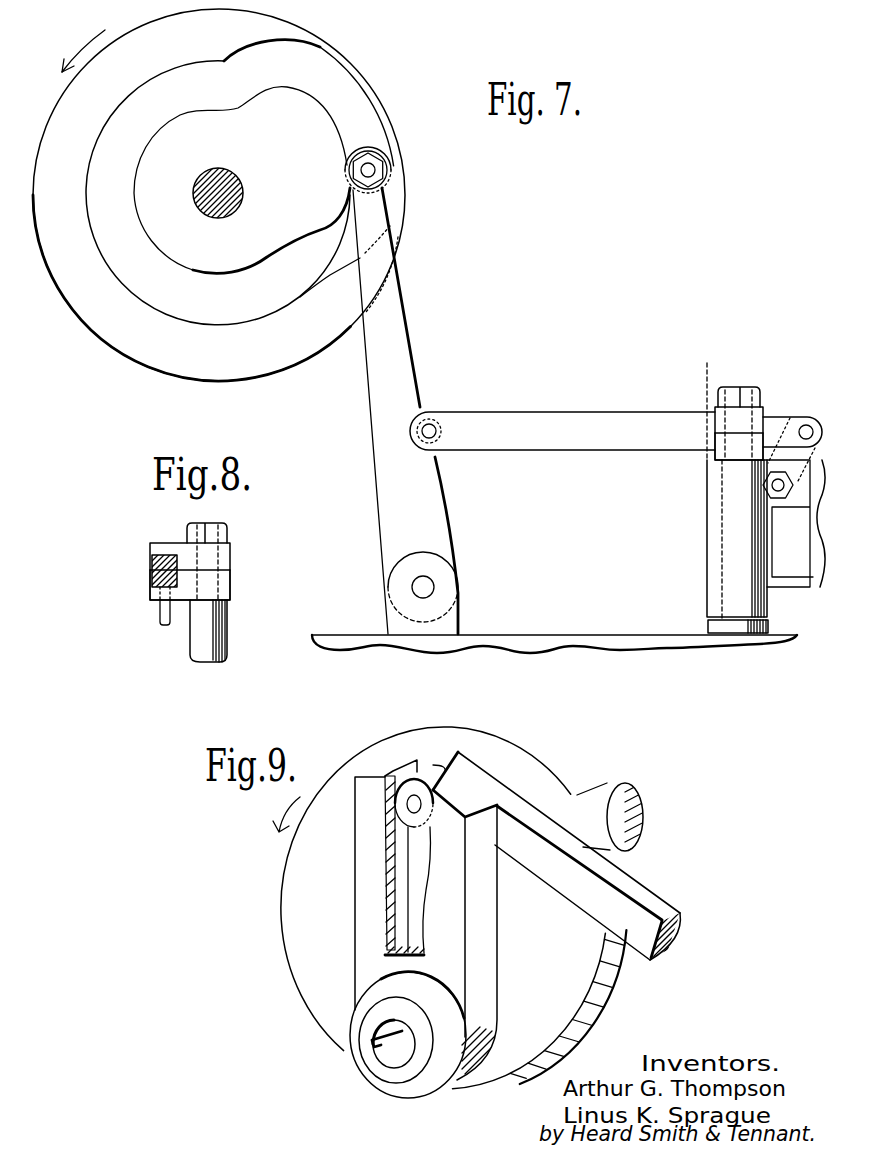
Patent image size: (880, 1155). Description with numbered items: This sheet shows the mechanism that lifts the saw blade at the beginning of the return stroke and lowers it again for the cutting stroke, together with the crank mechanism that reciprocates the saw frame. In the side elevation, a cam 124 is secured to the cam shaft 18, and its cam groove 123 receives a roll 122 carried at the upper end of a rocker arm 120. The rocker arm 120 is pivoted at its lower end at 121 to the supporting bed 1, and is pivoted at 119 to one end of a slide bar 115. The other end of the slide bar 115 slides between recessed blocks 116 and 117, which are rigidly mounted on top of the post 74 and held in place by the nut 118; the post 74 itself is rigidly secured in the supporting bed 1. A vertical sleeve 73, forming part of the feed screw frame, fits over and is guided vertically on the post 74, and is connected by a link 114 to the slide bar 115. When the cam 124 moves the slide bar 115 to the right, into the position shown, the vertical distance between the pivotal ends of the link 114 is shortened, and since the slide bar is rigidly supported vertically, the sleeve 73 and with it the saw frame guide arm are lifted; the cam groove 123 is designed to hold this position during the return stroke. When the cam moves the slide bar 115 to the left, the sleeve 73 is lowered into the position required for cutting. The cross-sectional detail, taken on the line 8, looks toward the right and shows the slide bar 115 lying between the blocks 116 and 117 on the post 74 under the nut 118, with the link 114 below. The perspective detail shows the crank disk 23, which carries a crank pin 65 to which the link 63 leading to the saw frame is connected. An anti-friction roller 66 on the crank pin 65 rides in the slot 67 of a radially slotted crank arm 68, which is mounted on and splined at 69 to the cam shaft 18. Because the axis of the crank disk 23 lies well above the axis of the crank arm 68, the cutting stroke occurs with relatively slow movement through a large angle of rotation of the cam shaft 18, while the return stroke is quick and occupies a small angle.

In FIG. 7, the supporting bed 1 is at (513, 638).
In FIG. 7, the section line 8— 8 is at (687, 462).
In FIG. 7, the cam shaft 18 is at (233, 177).
In FIG. 9, the crank disk 23 is at (285, 880).
In FIG. 9, the link 63 is at (655, 902).
In FIG. 9, the crank pin 65 is at (410, 797).
In FIG. 9, the anti-friction roller 66 is at (437, 785).
In FIG. 9, the slot 67 is at (402, 880).
In FIG. 9, the crank arm 68 is at (485, 977).
In FIG. 9, the spline 69 is at (373, 1037).
In FIG. 7, the vertical sleeve 73 is at (710, 532).
In FIG. 7, the post 74 is at (728, 617).
In FIG. 8, the post 74 is at (195, 648).
In FIG. 7, the link 114 is at (808, 460).
In FIG. 8, the link 114 is at (160, 615).
In FIG. 7, the slide bar 115 is at (575, 420).
In FIG. 8, the slide bar 115 is at (150, 568).
In FIG. 7, the recessed block 116 is at (762, 405).
In FIG. 8, the recessed block 116 is at (227, 558).
In FIG. 7, the recessed block 117 is at (720, 458).
In FIG. 8, the recessed block 117 is at (223, 587).
In FIG. 7, the nut 118 is at (748, 386).
In FIG. 8, the nut 118 is at (225, 535).
In FIG. 7, the pivot 119 is at (431, 430).
In FIG. 7, the rocker arm 120 is at (402, 357).
In FIG. 7, the pivot 121 is at (423, 587).
In FIG. 7, the roll 122 is at (378, 153).
In FIG. 7, the cam groove 123 is at (338, 97).
In FIG. 7, the cam 124 is at (233, 33).